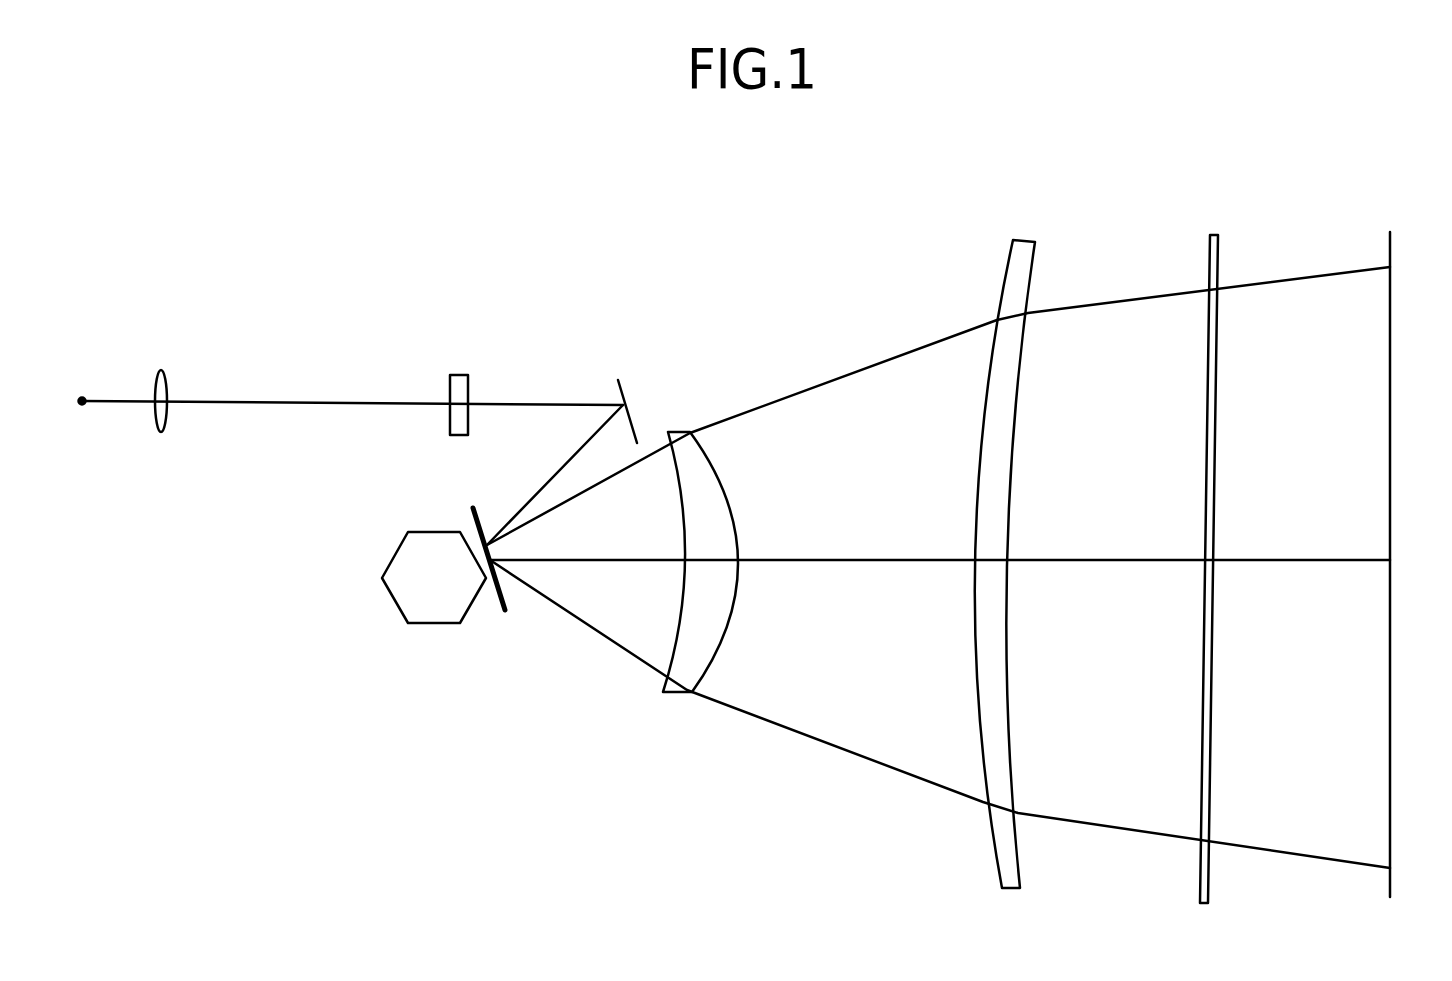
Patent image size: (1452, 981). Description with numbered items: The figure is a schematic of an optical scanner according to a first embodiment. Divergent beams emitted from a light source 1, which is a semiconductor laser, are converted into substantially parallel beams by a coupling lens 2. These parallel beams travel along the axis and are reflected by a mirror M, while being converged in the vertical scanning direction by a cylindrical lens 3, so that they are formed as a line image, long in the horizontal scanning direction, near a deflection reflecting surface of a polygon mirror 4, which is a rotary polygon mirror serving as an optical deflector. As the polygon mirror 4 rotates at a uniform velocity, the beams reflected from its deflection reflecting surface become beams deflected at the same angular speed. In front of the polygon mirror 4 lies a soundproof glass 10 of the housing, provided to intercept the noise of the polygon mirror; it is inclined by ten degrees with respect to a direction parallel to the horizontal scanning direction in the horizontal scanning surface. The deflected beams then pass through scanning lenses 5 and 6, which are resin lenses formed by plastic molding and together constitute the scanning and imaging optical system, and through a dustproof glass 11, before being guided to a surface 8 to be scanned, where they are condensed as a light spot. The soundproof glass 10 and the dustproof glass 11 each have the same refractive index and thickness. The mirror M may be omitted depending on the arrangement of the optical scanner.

The light source 1 is at (82, 398).
The coupling lens 2 is at (163, 372).
The cylindrical lens 3 is at (458, 385).
The mirror M is at (629, 378).
The polygon mirror 4 is at (410, 597).
The soundproof glass 10 is at (503, 612).
The scanning lens 5 is at (677, 695).
The scanning lens 6 is at (1006, 859).
The dustproof glass 11 is at (1220, 257).
The surface to be scanned 8 is at (1392, 360).